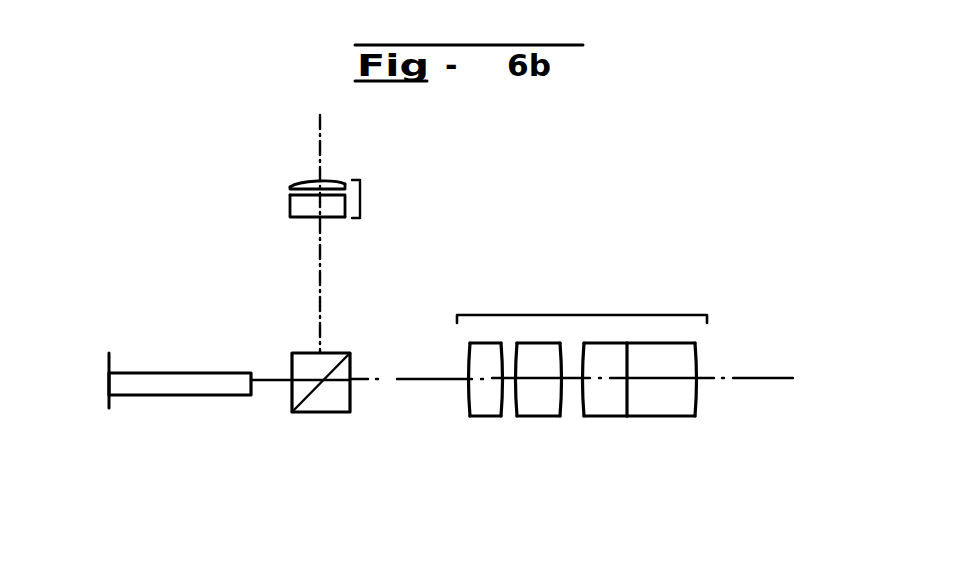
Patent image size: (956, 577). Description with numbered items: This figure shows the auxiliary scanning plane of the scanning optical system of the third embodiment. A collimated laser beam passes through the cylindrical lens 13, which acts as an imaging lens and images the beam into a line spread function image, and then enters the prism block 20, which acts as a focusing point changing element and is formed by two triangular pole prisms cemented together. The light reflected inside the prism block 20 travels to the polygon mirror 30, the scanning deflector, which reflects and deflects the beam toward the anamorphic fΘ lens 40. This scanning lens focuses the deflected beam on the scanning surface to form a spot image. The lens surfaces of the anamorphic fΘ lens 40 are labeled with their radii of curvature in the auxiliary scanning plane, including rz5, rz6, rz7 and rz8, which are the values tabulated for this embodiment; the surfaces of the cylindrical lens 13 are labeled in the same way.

The cylindrical lens 13 is at (310, 191).
The prism block 20 is at (337, 351).
The polygon mirror 30 is at (177, 382).
The anamorphic fΘ lens 40 is at (576, 313).
The radius of curvature in the auxiliary scanning plane rz5 is at (582, 397).
The radius of curvature in the auxiliary scanning plane rz6 is at (618, 397).
The radius of curvature in the auxiliary scanning plane rz7 is at (627, 402).
The radius of curvature in the auxiliary scanning plane rz8 is at (697, 398).